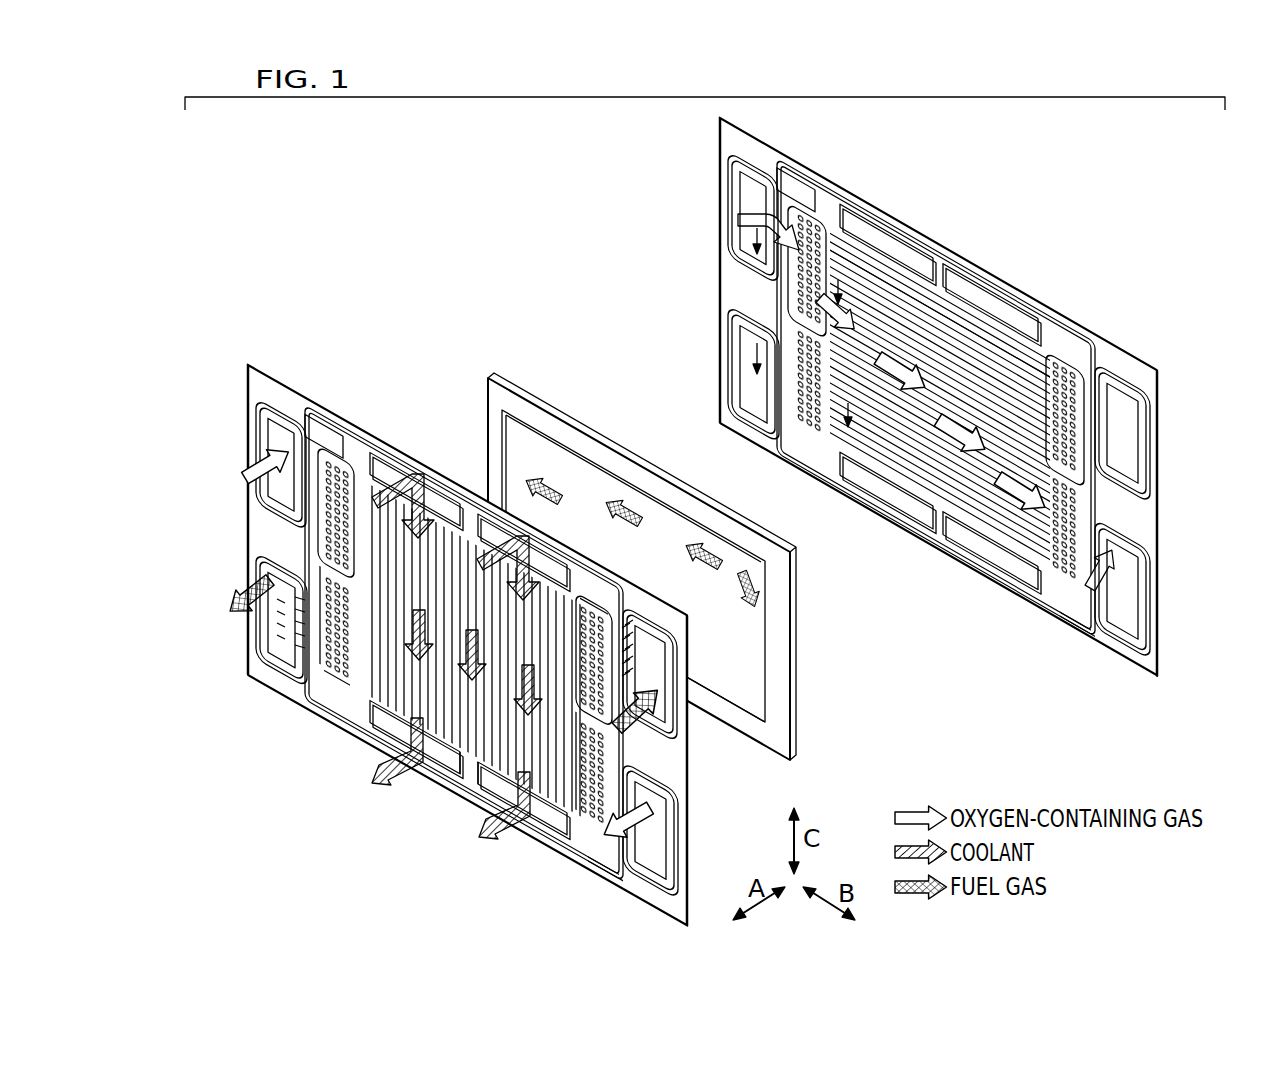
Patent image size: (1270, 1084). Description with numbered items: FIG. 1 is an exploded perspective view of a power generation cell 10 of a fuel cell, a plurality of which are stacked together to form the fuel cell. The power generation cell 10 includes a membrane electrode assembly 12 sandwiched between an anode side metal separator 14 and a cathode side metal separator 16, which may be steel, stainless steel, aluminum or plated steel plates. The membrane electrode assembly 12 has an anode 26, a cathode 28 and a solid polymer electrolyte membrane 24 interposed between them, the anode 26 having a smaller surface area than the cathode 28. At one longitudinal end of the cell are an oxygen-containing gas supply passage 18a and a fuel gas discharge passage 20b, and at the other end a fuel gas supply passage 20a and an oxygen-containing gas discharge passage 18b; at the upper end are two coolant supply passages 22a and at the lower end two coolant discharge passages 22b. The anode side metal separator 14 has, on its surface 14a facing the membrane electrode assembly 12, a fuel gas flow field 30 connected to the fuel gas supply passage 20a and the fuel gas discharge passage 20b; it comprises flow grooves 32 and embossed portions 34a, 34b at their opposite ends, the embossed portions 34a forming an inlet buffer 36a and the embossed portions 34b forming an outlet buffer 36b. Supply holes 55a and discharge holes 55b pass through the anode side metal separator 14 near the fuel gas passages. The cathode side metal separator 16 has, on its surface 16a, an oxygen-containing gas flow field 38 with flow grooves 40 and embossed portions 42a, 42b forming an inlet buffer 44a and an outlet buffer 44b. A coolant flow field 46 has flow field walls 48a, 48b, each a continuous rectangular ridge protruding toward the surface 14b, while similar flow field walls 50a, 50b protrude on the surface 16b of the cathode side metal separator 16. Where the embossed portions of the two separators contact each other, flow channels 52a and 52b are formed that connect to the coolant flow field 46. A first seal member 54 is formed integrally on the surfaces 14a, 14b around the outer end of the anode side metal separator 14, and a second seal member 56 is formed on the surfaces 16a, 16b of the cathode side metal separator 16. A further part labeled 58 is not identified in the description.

The power generation cell 10 is at (388, 309).
The membrane electrode assembly 12 is at (570, 418).
The anode side metal separator 14 is at (247, 388).
The cathode side metal separator 16 is at (718, 166).
The surface 14a is at (606, 866).
The surface 14b is at (642, 885).
The surface 16a is at (1112, 642).
The surface 16b is at (1080, 627).
The oxygen-containing gas supply passage 18a is at (283, 444).
The oxygen-containing gas discharge passage 18b is at (650, 826).
The fuel gas supply passage 20a is at (645, 655).
The fuel gas discharge passage 20b is at (280, 584).
The coolant supply passages 22a is at (396, 471).
The coolant discharge passages 22b is at (437, 762).
The solid polymer electrolyte membrane 24 is at (770, 738).
The anode 26 is at (587, 490).
The cathode 28 is at (798, 624).
The fuel gas flow field 30 is at (470, 767).
The flow grooves 32 is at (372, 708).
The embossed portions 34a is at (604, 741).
The embossed portions 34b is at (328, 524).
The inlet buffer 36a is at (603, 612).
The outlet buffer 36b is at (339, 682).
The oxygen-containing gas flow field 38 is at (930, 310).
The flow grooves 40 is at (900, 292).
The embossed portions 42a is at (815, 430).
The embossed portions 42b is at (1078, 463).
The inlet buffer 44a is at (814, 224).
The outlet buffer 44b is at (1082, 558).
The coolant flow field 46 is at (476, 639).
The flow field wall 48a is at (341, 457).
The flow field wall 48b is at (592, 600).
The flow field wall 50a is at (800, 220).
The flow field wall 50b is at (1063, 360).
The flow channel 52a is at (322, 653).
The flow channel 52b is at (592, 808).
The first seal member 54 is at (667, 913).
The supply holes 55a is at (632, 617).
The discharge holes 55b is at (305, 593).
The second seal member 56 is at (1130, 670).
The seal ridge 58 is at (1000, 310).